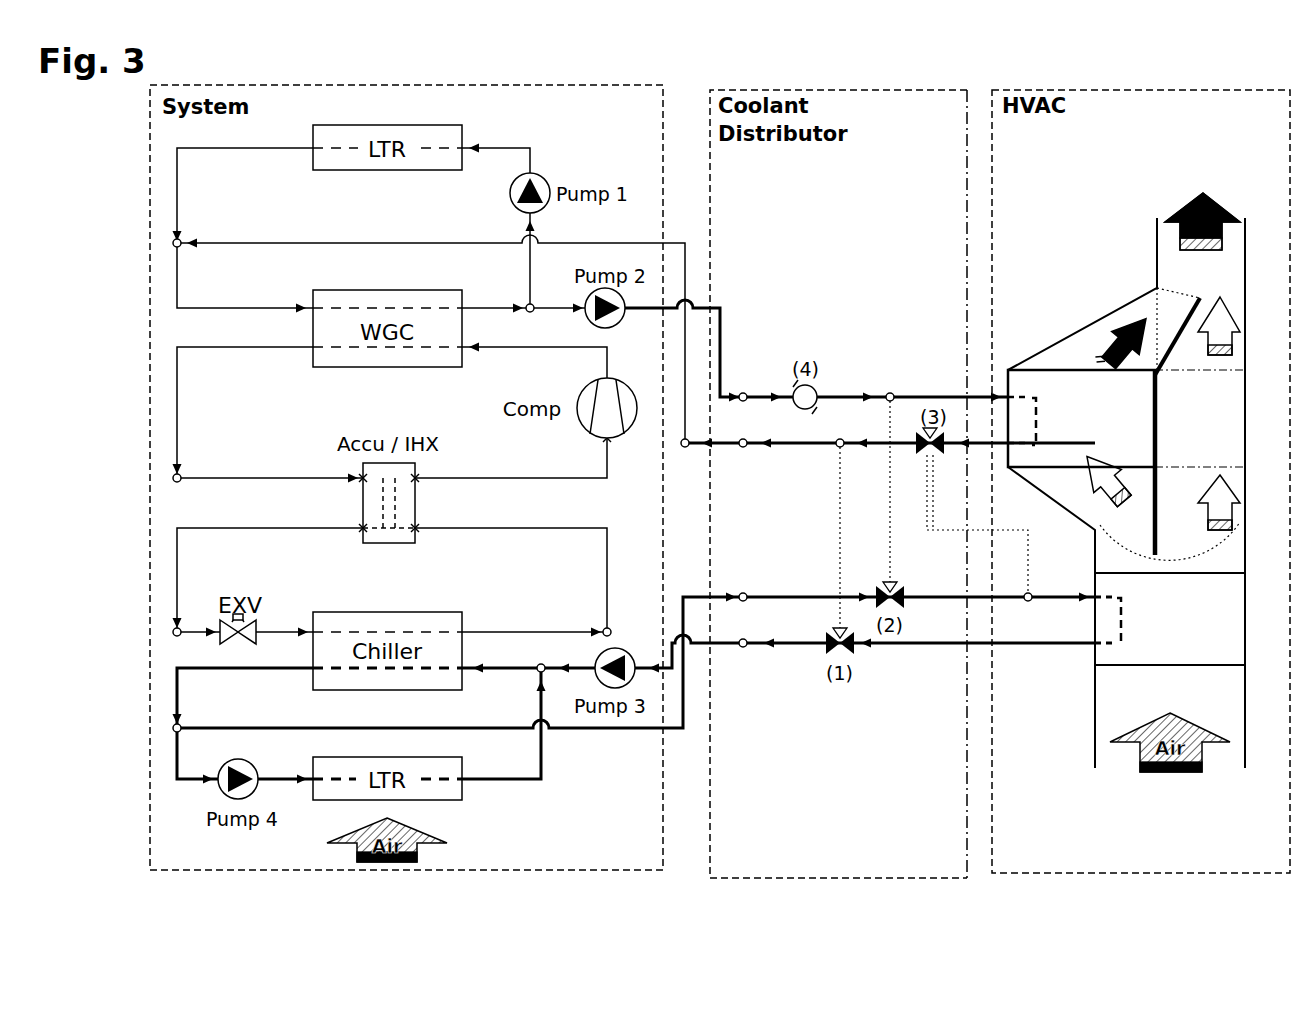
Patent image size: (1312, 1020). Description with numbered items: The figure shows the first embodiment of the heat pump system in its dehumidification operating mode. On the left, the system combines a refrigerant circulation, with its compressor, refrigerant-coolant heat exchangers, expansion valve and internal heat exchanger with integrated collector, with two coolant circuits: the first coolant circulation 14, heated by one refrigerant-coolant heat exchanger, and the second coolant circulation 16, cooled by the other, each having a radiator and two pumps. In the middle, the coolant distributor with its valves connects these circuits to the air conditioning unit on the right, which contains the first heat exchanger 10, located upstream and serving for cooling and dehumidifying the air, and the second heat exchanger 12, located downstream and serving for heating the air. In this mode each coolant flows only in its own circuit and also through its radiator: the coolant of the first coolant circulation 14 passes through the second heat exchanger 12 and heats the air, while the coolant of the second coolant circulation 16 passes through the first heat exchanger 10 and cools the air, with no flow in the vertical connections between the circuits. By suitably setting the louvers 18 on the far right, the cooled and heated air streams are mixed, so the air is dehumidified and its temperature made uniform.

The first heat exchanger 10 is at (1237, 608).
The second heat exchanger 12 is at (1146, 404).
The first coolant circulation 14 is at (742, 318).
The second coolant circulation 16 is at (722, 702).
The louvers 18 is at (1178, 350).